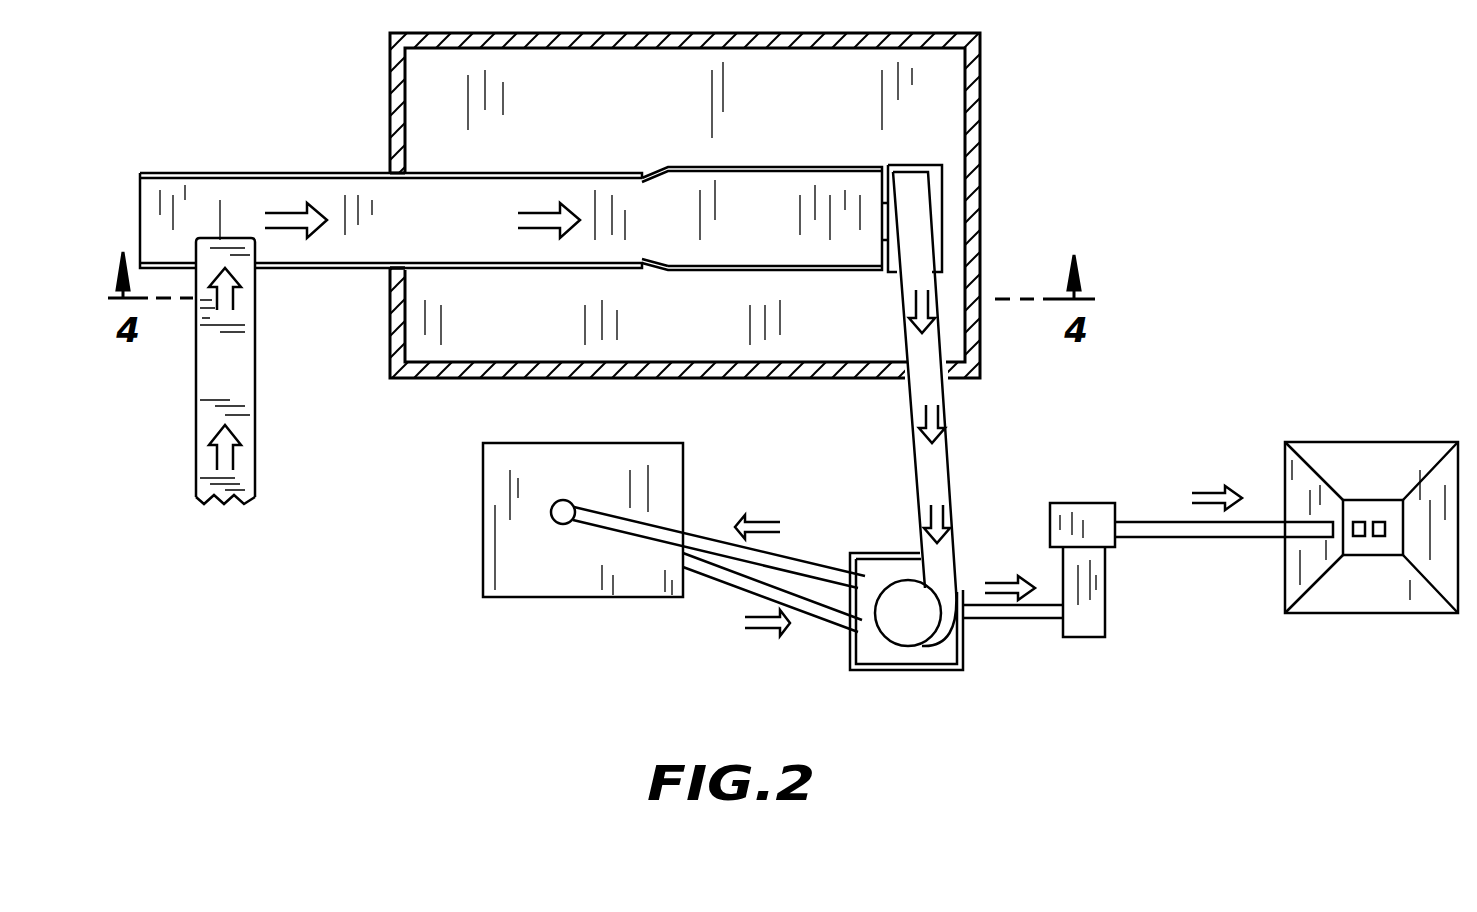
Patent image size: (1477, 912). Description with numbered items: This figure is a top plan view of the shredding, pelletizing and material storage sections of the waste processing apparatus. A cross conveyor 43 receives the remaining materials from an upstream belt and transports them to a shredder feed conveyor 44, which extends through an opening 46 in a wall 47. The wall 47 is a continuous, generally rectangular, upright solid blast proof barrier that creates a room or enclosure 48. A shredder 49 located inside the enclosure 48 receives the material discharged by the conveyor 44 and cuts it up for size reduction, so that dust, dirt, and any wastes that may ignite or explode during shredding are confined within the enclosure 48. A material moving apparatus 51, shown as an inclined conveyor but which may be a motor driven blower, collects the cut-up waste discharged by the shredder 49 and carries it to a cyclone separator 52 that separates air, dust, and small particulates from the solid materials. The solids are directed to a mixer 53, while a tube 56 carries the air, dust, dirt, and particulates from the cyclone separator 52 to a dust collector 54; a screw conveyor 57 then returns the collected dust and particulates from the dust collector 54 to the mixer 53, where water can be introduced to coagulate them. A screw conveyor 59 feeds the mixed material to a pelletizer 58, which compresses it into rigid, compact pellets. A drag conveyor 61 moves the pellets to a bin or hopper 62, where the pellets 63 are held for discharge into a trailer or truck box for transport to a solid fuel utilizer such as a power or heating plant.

The cross conveyor 43 is at (205, 447).
The shredder feed conveyor 44 is at (206, 195).
The opening 46 is at (388, 273).
The wall 47 is at (396, 78).
The enclosure 48 is at (657, 108).
The shredder 49 is at (782, 185).
The material moving apparatus 51 is at (940, 460).
The cyclone separator 52 is at (895, 630).
The mixer 53 is at (932, 660).
The dust collector 54 is at (571, 586).
The tube 56 is at (823, 565).
The screw conveyor 57 is at (723, 578).
The pelletizer 58 is at (1100, 603).
The screw conveyor 59 is at (1010, 620).
The drag conveyor 61 is at (1153, 527).
The hopper 62 is at (1377, 455).
The pellets 63 is at (1358, 540).